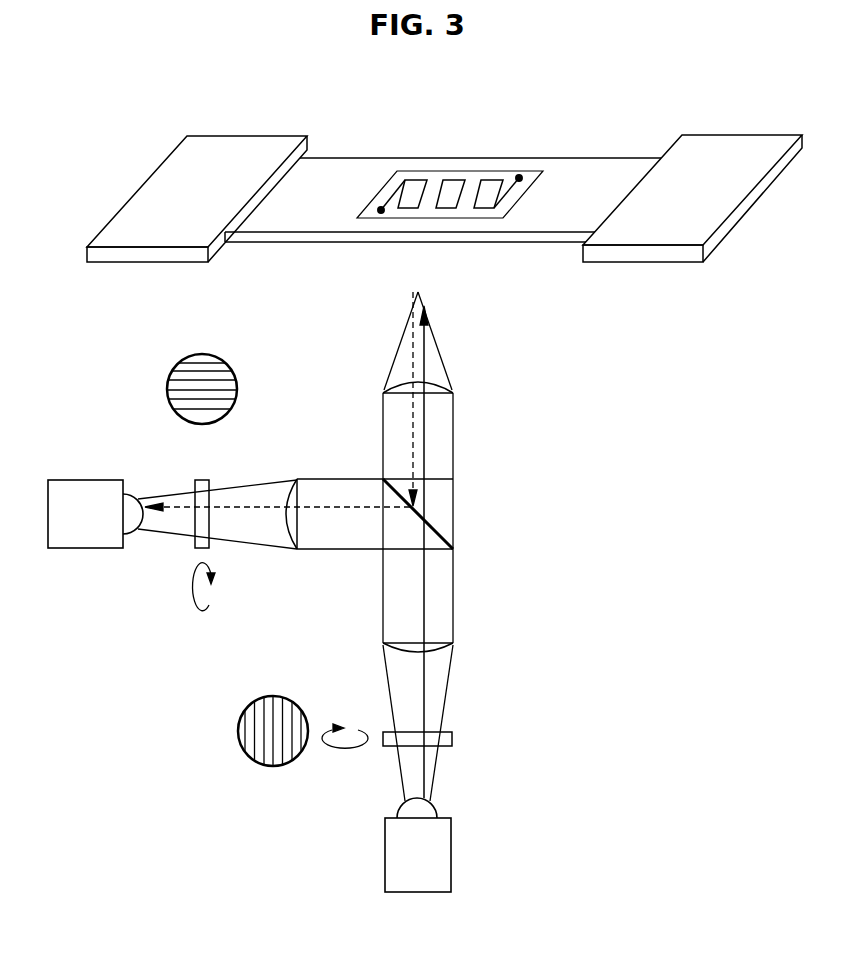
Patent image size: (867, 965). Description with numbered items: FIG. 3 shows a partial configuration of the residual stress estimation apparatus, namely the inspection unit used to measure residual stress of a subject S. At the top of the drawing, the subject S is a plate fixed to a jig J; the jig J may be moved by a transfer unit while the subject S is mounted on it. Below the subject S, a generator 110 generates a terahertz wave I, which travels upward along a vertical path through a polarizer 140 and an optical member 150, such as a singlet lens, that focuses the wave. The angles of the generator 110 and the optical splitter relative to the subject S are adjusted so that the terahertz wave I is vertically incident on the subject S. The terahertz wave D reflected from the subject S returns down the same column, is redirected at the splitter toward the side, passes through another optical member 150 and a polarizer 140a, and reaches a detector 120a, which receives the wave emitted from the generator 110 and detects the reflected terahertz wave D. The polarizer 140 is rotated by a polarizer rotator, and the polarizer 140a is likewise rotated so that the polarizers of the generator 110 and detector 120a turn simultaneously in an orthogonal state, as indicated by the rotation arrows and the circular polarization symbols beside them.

The generator 110 is at (452, 853).
The detector 120a is at (80, 548).
The polarizer 140 is at (452, 736).
The polarizer 140a is at (195, 480).
The optical member 150 is at (397, 385).
The subject S is at (578, 175).
The jig J is at (737, 148).
The terahertz wave D is at (246, 507).
The terahertz wave I is at (423, 360).